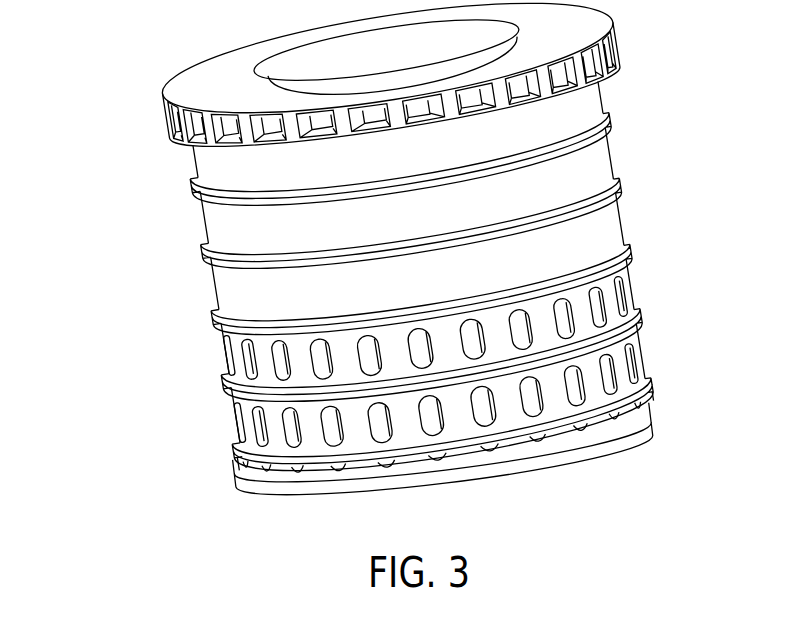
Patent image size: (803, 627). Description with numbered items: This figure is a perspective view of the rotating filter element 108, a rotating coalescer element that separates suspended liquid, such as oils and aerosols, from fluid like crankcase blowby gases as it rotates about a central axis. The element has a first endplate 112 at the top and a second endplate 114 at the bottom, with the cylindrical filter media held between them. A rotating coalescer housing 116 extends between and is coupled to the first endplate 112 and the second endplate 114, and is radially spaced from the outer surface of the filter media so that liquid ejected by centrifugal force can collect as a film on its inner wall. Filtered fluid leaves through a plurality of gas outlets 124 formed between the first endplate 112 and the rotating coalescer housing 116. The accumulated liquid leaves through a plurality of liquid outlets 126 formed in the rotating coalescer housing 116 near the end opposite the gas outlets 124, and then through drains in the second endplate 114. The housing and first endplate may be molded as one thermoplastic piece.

The rotating filter element 108 is at (138, 28).
The first endplate 112 is at (205, 82).
The second endplate 114 is at (318, 500).
The rotating coalescer housing 116 is at (235, 297).
The gas outlets 124 is at (558, 100).
The liquid outlets 126 is at (250, 432).